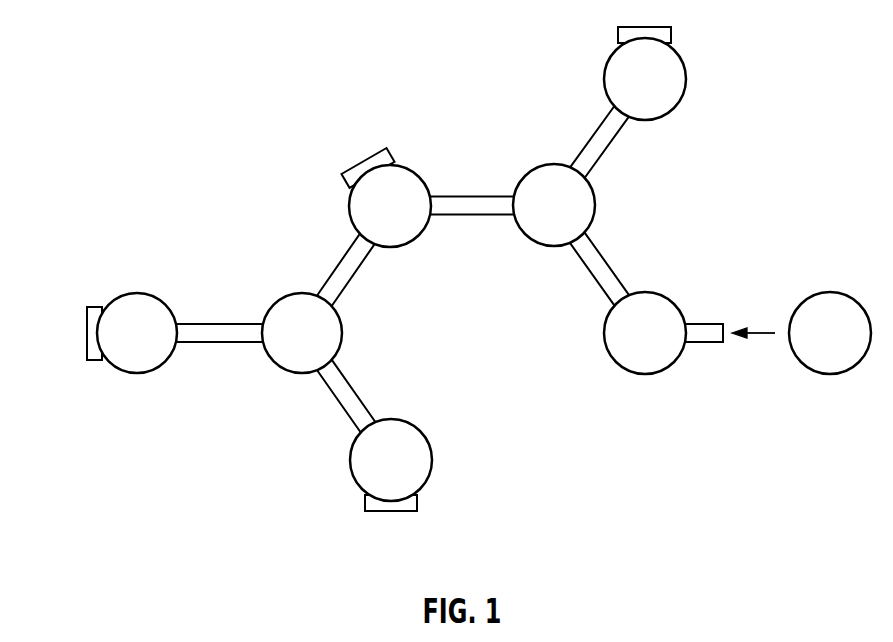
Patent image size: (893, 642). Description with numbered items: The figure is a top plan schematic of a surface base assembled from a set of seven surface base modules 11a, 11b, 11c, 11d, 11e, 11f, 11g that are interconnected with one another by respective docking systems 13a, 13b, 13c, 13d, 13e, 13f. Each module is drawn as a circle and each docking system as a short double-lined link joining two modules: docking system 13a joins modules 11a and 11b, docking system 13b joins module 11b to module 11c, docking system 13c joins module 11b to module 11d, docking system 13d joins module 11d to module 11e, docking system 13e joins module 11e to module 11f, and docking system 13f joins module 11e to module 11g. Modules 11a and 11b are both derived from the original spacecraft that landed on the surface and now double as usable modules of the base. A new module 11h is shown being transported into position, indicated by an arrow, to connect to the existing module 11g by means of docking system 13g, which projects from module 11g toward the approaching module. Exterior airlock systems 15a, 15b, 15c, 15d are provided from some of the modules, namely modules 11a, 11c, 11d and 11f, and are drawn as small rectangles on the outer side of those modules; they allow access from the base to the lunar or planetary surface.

The surface base module 11a is at (115, 346).
The surface base module 11b is at (280, 346).
The surface base module 11c is at (369, 473).
The surface base module 11d is at (368, 219).
The surface base module 11e is at (532, 218).
The surface base module 11f is at (626, 92).
The surface base module 11g is at (623, 346).
The new module 11h is at (808, 346).
The docking system 13a is at (217, 342).
The docking system 13b is at (337, 403).
The docking system 13c is at (347, 283).
The docking system 13d is at (472, 215).
The docking system 13e is at (595, 130).
The docking system 13f is at (605, 265).
The docking system 13g is at (703, 342).
The exterior airlock system 15a is at (87, 332).
The exterior airlock system 15b is at (392, 512).
The exterior airlock system 15c is at (368, 162).
The exterior airlock system 15d is at (618, 33).